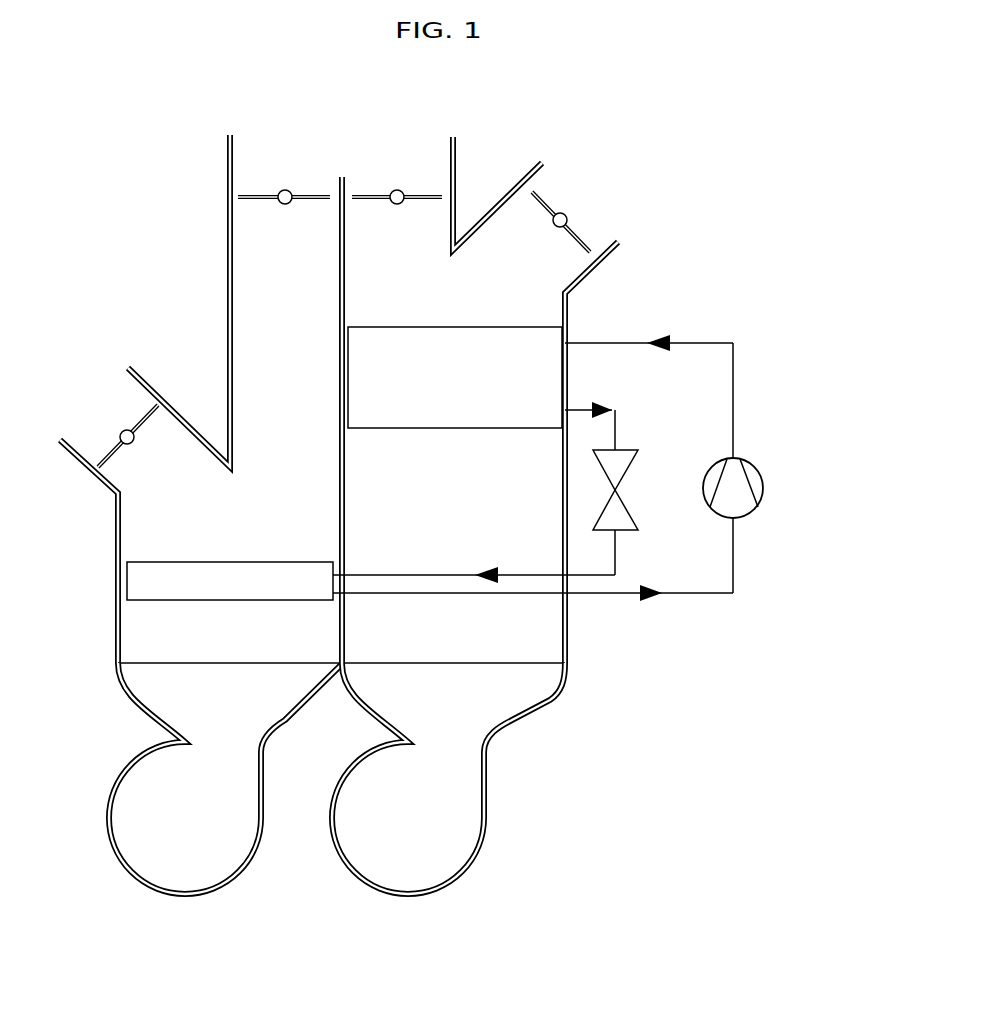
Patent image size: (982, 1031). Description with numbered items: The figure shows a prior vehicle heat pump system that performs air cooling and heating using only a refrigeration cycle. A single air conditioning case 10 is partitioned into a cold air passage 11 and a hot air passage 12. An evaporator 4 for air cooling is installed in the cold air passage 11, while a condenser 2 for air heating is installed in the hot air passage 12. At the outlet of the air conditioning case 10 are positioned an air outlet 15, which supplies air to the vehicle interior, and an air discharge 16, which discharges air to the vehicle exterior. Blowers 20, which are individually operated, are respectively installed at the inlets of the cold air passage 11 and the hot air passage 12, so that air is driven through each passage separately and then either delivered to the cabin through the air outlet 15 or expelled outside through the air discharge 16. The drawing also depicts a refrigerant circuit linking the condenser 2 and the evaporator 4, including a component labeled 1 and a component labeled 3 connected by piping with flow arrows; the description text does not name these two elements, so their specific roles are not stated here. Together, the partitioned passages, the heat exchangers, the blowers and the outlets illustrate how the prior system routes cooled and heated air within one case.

The pump 1 is at (765, 484).
The condenser 2 is at (528, 327).
The expansion valve 3 is at (632, 473).
The evaporator 4 is at (155, 595).
The air conditioning case 10 is at (578, 648).
The cold air passage 11 is at (200, 547).
The hot air passage 12 is at (475, 518).
The air outlet 15 is at (288, 172).
The air discharge 16 is at (580, 204).
The blowers 20 is at (186, 896).